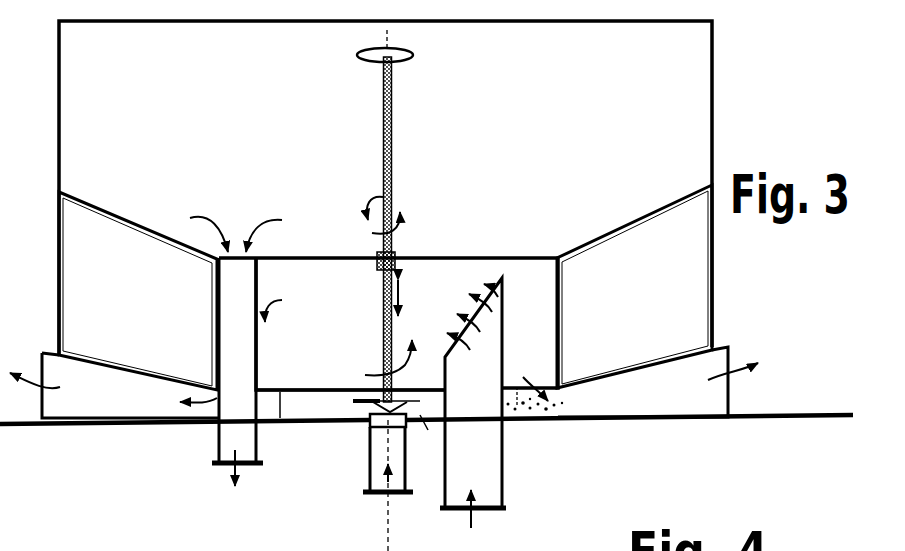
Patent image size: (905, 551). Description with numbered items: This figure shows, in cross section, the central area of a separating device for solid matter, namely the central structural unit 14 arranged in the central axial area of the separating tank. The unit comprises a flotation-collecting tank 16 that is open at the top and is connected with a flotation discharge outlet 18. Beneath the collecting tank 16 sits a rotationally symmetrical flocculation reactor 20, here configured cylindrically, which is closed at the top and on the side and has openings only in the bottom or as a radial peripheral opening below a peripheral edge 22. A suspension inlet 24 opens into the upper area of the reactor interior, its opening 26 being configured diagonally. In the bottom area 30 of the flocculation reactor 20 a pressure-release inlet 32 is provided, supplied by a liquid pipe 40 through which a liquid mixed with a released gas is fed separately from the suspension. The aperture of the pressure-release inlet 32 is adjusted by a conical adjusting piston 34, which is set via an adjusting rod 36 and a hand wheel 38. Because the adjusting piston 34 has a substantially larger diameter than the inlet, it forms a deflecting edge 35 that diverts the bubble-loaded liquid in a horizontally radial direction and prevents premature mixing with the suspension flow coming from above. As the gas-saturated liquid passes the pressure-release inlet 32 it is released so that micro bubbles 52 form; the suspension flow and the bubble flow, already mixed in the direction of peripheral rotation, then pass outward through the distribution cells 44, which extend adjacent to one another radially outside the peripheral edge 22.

The central structural unit 14 is at (764, 124).
The flotation-collecting tank 16 is at (226, 143).
The flotation discharge outlet 18 is at (218, 438).
The flocculation reactor 20 is at (432, 278).
The peripheral edge 22 is at (305, 388).
The suspension inlet 24 is at (506, 467).
The opening 26 is at (476, 284).
The bottom area 30 is at (800, 418).
The pressure-release inlet 32 is at (362, 421).
The adjusting piston 34 is at (362, 405).
The deflecting edge 35 is at (428, 430).
The adjusting rod 36 is at (391, 138).
The hand wheel 38 is at (408, 56).
The liquid pipe 40 is at (370, 475).
The distribution cells 44 is at (118, 408).
The micro bubbles 52 is at (528, 416).